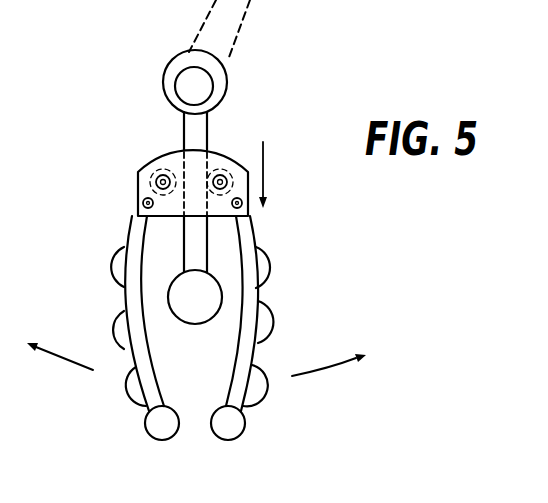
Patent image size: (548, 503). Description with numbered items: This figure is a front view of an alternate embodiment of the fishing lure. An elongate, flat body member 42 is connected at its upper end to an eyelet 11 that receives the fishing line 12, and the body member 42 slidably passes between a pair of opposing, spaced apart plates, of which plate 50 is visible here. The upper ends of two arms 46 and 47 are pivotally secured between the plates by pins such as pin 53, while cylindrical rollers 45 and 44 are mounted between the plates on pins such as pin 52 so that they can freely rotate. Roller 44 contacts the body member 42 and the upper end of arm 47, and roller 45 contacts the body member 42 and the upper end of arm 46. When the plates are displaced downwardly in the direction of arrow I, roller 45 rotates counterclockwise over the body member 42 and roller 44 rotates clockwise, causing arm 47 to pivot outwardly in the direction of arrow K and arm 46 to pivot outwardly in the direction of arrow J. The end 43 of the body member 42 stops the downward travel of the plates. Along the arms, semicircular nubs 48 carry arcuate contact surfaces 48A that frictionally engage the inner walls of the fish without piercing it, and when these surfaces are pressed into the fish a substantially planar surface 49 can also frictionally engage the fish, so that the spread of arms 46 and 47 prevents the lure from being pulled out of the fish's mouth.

The eyelet 11 is at (224, 95).
The fishing line 12 is at (238, 35).
The body member 42 is at (170, 117).
The end 43 is at (200, 292).
The cylindrical roller 44 is at (234, 166).
The cylindrical roller 45 is at (137, 165).
The arm 46 is at (85, 278).
The arm 47 is at (292, 279).
The semicircular nubs 48 is at (119, 340).
The arcuate contact surfaces 48A is at (127, 389).
The substantially planar surface 49 is at (118, 290).
The plate 50 is at (142, 199).
The pin 52 is at (167, 193).
The pin 53 is at (135, 210).
The arrow I is at (268, 172).
The arrow J is at (62, 366).
The arrow K is at (322, 367).